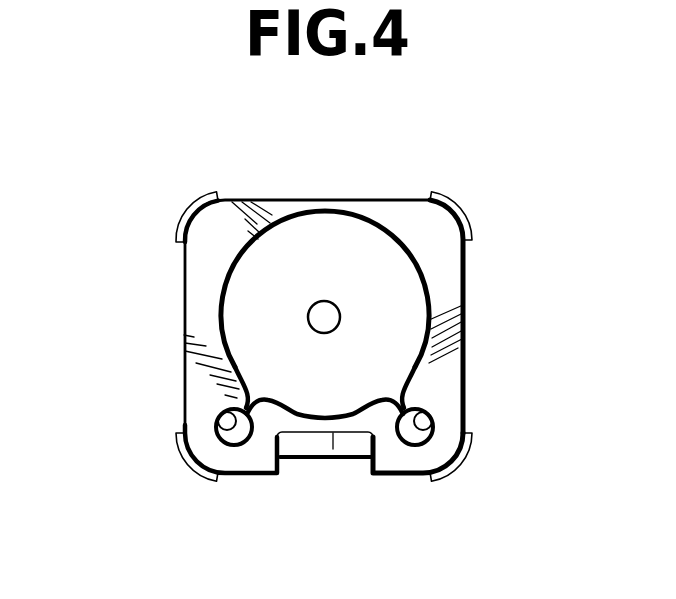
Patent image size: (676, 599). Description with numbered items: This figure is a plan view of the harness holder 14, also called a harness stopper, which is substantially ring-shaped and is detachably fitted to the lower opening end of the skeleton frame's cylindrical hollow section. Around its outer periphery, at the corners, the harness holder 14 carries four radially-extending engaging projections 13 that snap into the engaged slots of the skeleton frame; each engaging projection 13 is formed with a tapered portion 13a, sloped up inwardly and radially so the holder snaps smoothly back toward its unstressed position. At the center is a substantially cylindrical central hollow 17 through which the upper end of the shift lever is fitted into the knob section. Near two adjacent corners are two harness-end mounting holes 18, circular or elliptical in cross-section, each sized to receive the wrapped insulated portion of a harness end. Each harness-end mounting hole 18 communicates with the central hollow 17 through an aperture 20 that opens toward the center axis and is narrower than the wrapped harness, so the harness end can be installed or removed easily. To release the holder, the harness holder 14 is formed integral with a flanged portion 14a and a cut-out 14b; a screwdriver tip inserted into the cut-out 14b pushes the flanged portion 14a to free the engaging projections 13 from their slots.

The engaging projection 13 is at (462, 214).
The tapered portion 13a is at (432, 471).
The harness holder 14 is at (368, 199).
The flanged portion 14a is at (298, 442).
The cut-out 14b is at (344, 440).
The central hollow 17 is at (380, 281).
The harness-end mounting hole 18 is at (222, 425).
The aperture 20 is at (386, 395).